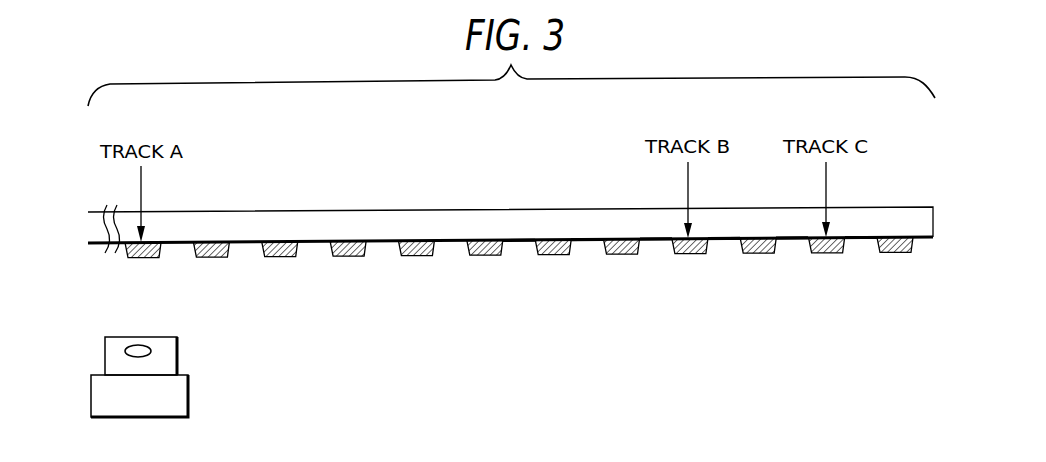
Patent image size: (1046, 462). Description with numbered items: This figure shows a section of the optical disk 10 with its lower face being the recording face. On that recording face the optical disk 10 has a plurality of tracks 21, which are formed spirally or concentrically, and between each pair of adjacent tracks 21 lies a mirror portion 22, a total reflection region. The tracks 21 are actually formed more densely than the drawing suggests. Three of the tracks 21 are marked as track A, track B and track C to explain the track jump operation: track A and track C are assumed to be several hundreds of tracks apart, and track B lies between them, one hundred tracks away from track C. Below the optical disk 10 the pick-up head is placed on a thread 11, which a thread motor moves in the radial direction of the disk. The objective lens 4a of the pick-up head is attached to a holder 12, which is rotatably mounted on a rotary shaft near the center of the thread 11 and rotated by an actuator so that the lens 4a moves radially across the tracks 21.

The optical disk 10 is at (409, 210).
The tracks 21 is at (522, 269).
The mirror portion 22 is at (693, 262).
The thread 11 is at (189, 393).
The holder 12 is at (178, 354).
The objective lens 4a is at (140, 345).